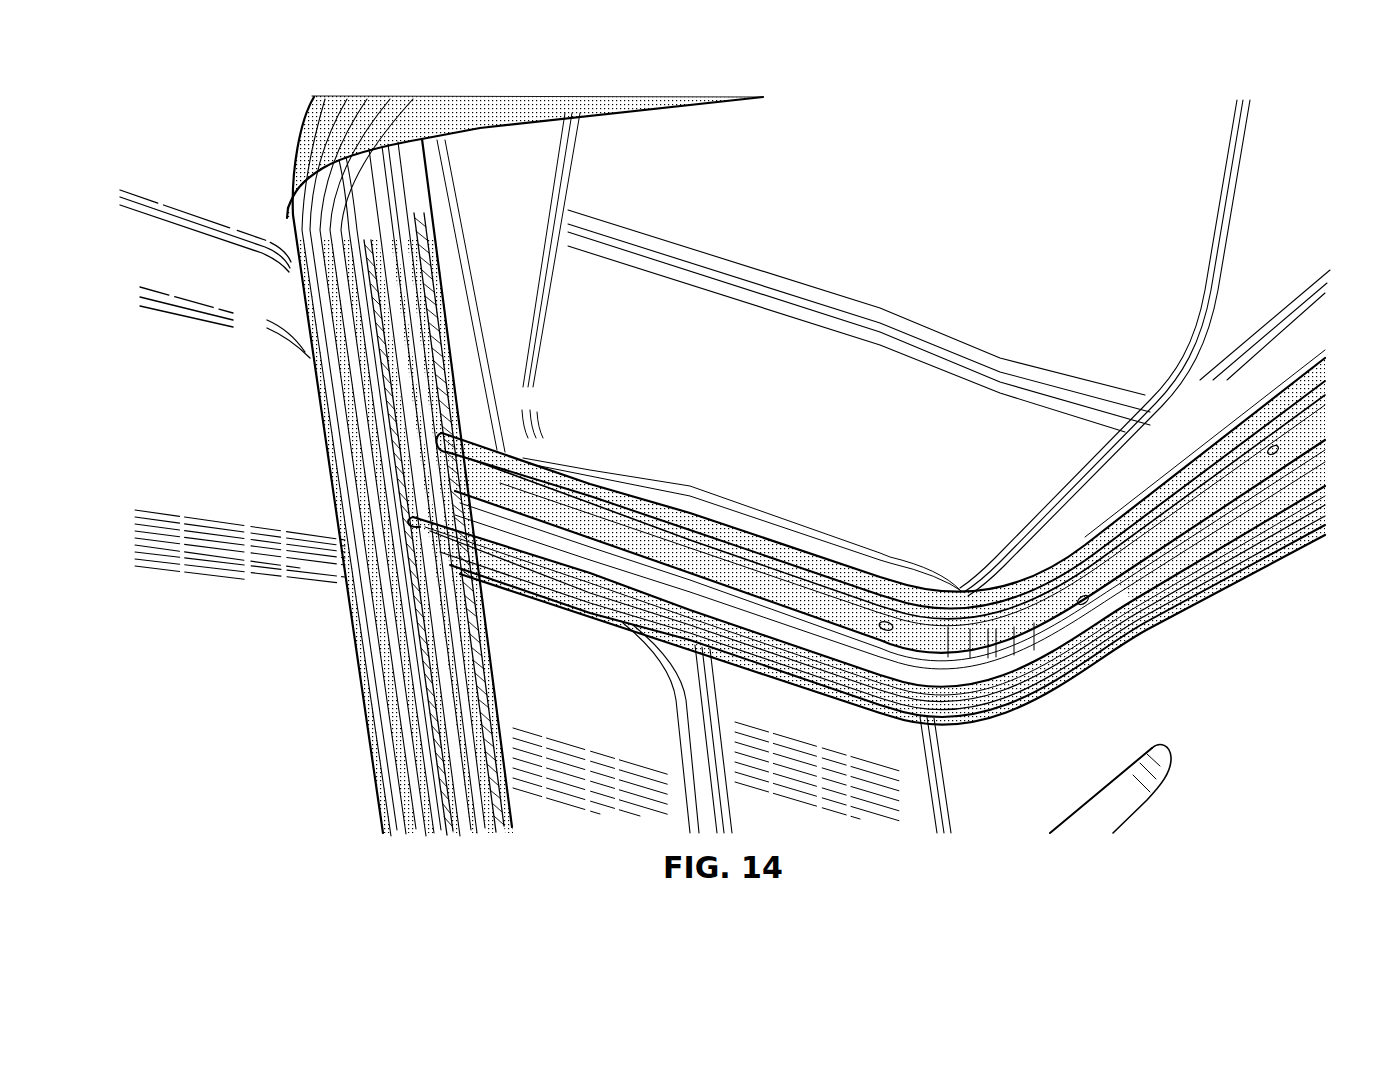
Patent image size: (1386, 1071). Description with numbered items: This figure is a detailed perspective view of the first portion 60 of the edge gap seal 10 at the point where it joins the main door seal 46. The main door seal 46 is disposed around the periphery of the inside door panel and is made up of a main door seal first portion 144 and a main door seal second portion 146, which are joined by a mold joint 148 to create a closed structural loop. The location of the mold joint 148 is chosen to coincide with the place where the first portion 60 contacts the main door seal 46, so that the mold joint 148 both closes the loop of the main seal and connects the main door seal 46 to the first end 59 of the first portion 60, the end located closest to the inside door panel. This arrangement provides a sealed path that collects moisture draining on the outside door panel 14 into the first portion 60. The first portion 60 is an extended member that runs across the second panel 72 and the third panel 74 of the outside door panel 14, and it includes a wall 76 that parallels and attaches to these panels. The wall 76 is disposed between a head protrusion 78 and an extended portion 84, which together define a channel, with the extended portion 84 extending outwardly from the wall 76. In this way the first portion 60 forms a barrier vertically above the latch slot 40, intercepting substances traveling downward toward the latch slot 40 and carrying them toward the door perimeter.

The edge gap seal 10 is at (866, 512).
The outside door panel 14 is at (852, 220).
The latch slot 40 is at (1130, 803).
The main door seal 46 is at (356, 460).
The first end 59 is at (462, 432).
The first portion 60 is at (1190, 623).
The second panel 72 is at (1238, 729).
The third panel 74 is at (576, 701).
The wall 76 is at (590, 505).
The head protrusion 78 is at (560, 467).
The extended portion 84 is at (540, 580).
The main door seal first portion 144 is at (410, 213).
The main door seal second portion 146 is at (315, 223).
The mold joint 148 is at (448, 380).